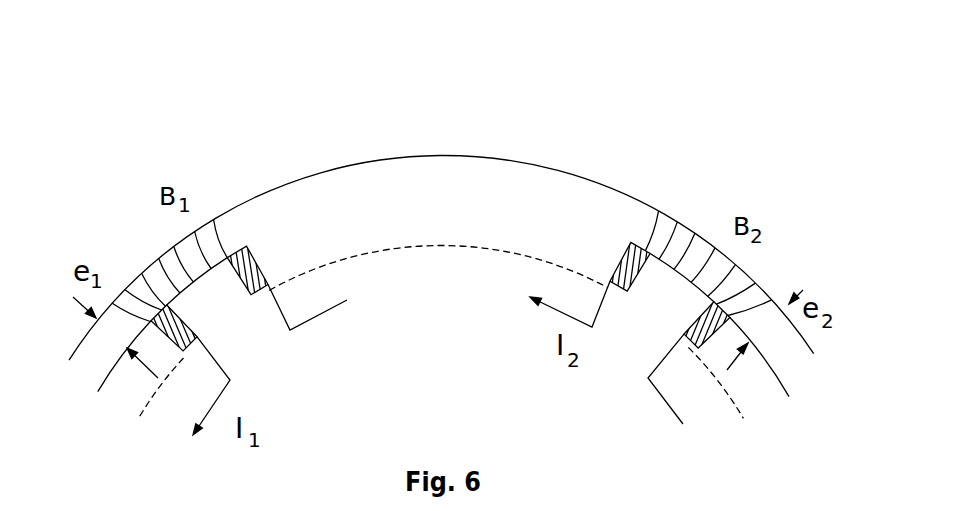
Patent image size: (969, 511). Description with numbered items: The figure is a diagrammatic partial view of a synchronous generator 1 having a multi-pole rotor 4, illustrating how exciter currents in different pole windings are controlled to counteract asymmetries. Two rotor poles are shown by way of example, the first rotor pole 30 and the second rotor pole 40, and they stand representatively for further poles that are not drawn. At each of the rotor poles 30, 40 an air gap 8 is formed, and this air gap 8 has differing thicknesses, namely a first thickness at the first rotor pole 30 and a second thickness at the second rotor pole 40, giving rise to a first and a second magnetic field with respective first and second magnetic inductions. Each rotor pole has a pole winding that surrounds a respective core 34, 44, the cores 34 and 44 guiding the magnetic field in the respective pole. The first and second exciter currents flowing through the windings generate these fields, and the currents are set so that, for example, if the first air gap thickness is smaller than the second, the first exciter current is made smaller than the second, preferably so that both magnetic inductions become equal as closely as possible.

The synchronous generator 1 is at (441, 220).
The air gap 8 is at (420, 175).
The first rotor pole 30 is at (258, 242).
The second rotor pole 40 is at (617, 239).
The core 34 is at (193, 359).
The core 44 is at (688, 352).
The multi-pole rotor 4 is at (443, 405).